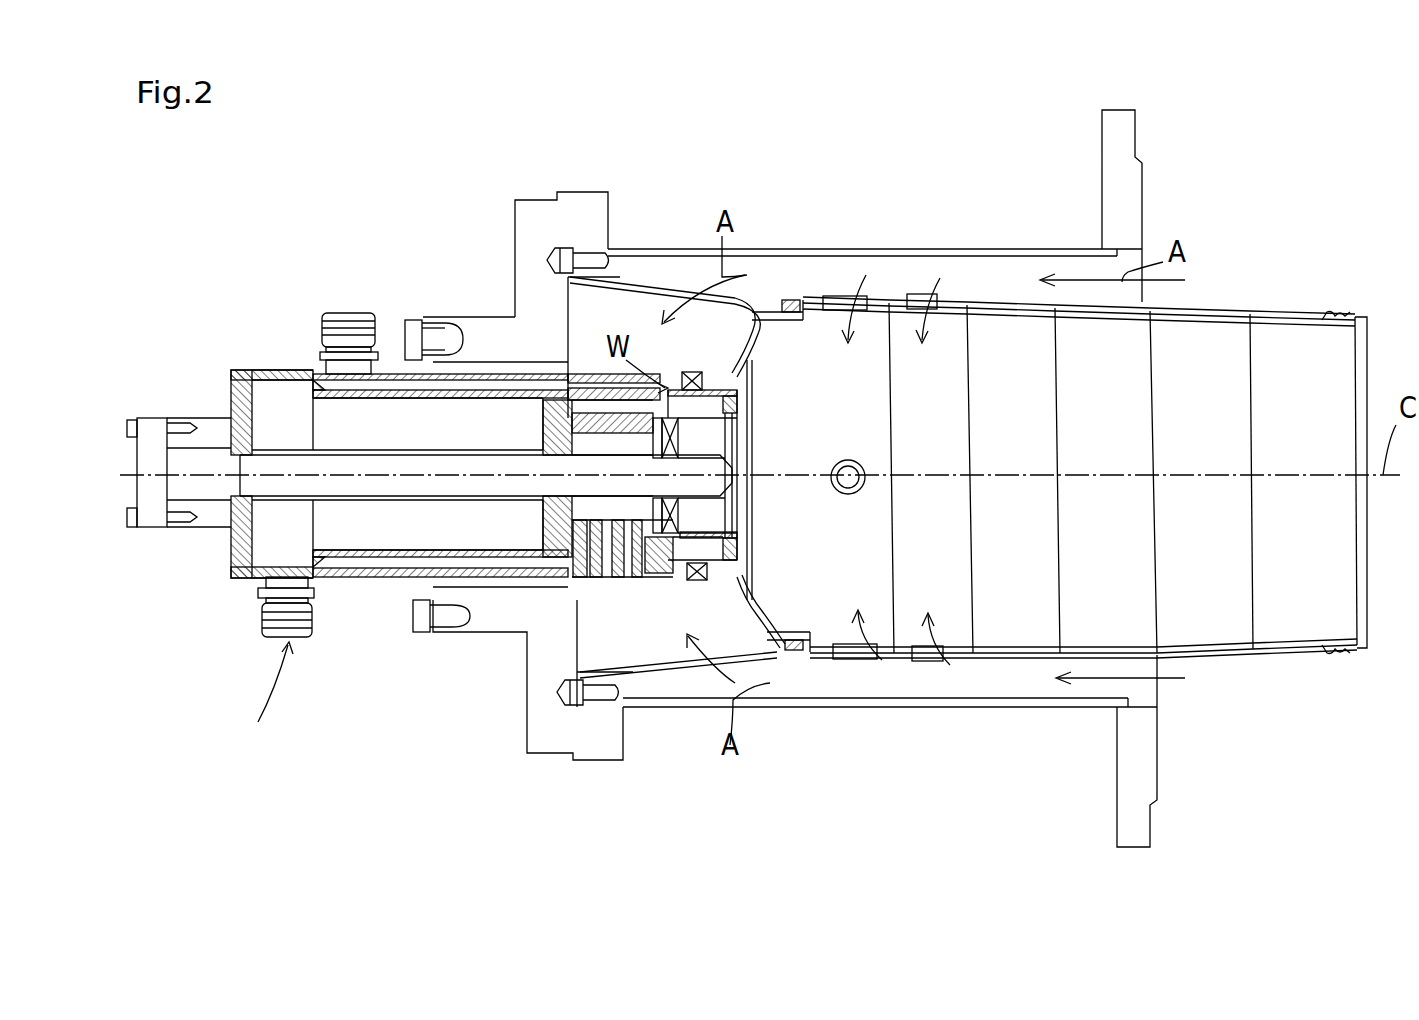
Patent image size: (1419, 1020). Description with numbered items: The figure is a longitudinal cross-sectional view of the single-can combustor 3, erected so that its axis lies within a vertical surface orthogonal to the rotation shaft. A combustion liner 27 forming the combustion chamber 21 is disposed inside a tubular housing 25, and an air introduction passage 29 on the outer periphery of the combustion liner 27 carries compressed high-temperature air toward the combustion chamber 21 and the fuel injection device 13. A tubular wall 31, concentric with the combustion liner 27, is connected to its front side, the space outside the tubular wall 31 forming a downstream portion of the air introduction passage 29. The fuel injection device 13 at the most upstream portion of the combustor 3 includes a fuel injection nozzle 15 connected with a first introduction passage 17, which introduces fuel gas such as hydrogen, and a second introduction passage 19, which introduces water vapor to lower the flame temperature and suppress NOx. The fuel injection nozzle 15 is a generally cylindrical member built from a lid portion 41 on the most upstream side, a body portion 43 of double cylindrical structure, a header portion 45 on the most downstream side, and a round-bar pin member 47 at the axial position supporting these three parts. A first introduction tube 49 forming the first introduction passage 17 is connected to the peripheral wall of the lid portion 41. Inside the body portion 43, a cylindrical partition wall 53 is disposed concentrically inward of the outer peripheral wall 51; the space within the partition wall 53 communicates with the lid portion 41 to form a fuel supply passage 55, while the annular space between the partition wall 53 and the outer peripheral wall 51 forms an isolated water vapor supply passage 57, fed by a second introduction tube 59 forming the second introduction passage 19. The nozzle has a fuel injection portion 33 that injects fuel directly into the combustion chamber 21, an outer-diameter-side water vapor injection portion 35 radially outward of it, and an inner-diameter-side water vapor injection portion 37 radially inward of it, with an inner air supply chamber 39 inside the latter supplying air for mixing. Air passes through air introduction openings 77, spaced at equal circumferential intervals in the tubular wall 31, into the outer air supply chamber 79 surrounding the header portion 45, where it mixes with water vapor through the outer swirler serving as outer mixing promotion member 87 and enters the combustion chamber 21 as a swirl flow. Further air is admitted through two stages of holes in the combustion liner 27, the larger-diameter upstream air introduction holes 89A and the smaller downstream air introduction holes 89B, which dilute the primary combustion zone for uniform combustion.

The combustor 3 is at (1228, 162).
The fuel injection device 13 is at (272, 220).
The fuel injection nozzle 15 is at (357, 578).
The first introduction passage 17 is at (248, 607).
The second introduction passage 19 is at (317, 324).
The combustion chamber 21 is at (1026, 535).
The tubular housing 25 is at (981, 252).
The combustion liner 27 is at (1012, 660).
The air introduction passage 29 is at (917, 700).
The tubular wall 31 is at (633, 278).
The fuel injection portion 33 is at (745, 390).
The outer-diameter-side water vapor injection portion 35 is at (663, 374).
The inner-diameter-side water vapor injection portion 37 is at (682, 430).
The inner air supply chamber 39 is at (585, 443).
The lid portion 41 is at (237, 368).
The body portion 43 is at (383, 368).
The header portion 45 is at (655, 575).
The pin member 47 is at (353, 481).
The first introduction tube 49 is at (268, 626).
The outer peripheral wall 51 is at (386, 580).
The partition wall 53 is at (404, 554).
The fuel supply passage 55 is at (380, 535).
The water vapor supply passage 57 is at (371, 385).
The second introduction tube 59 is at (322, 330).
The air introduction openings 77 is at (646, 280).
The outer air supply chamber 79 is at (617, 622).
The outer mixing promotion member 87 is at (700, 584).
The air introduction holes in the upstream-side stage 89A is at (836, 298).
The air introduction holes in the downstream-side stage 89B is at (912, 296).